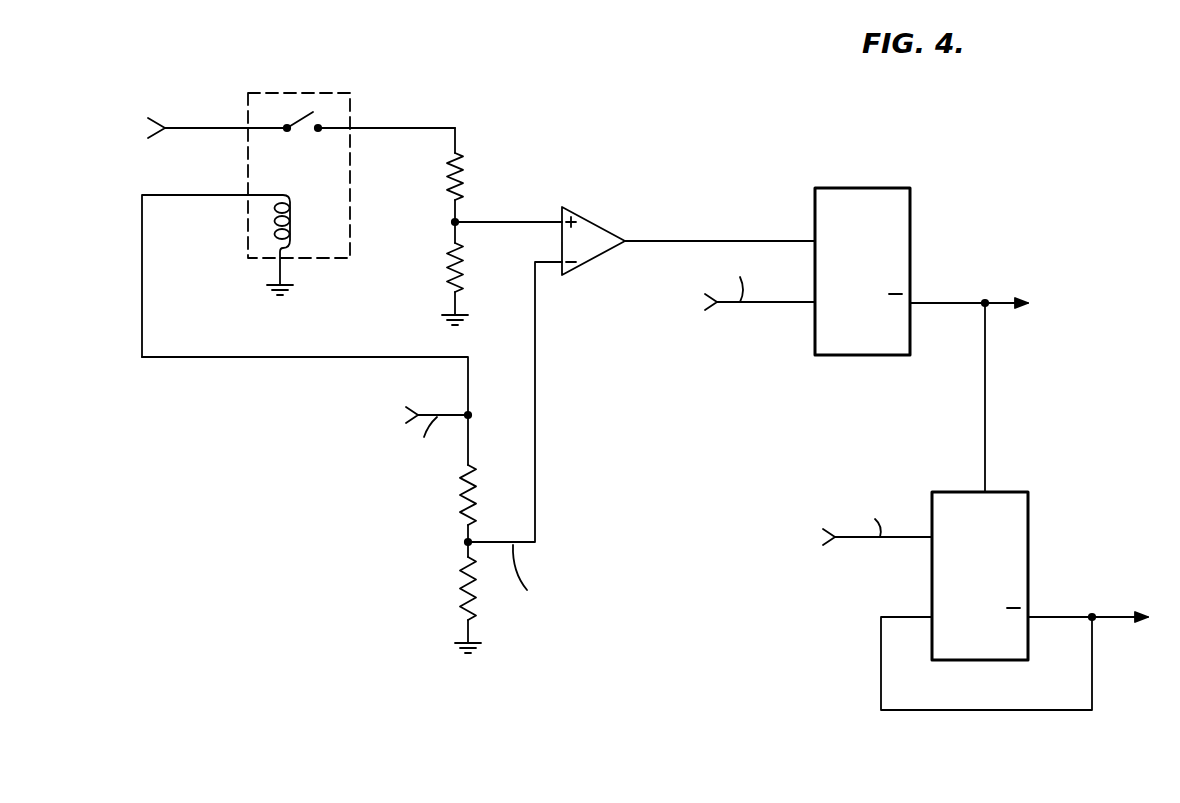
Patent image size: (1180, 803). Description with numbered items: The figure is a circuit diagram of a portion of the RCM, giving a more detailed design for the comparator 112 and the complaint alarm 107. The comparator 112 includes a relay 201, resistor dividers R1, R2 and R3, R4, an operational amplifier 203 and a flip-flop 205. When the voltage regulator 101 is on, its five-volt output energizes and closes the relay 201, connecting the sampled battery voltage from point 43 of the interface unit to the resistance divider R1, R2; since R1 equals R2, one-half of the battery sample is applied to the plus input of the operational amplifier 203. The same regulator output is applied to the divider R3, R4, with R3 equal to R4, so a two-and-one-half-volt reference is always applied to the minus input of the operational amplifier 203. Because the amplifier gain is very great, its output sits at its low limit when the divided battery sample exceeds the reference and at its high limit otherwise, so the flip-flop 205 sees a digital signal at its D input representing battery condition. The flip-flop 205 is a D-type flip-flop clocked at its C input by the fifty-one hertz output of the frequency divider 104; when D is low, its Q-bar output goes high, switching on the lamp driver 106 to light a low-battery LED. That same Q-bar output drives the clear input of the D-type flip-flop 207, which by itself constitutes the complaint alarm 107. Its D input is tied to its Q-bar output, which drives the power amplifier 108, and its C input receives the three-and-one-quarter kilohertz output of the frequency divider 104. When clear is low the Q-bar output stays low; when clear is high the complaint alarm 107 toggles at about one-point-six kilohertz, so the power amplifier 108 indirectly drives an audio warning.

The comparator 112 is at (638, 91).
The point of the interface unit 43 is at (191, 127).
The relay 201 is at (312, 93).
The resistor R1 is at (462, 193).
The resistor R2 is at (462, 264).
The resistor R3 is at (460, 497).
The resistor R4 is at (460, 579).
The operational amplifier 203 is at (590, 219).
The frequency divider 104 is at (750, 403).
The flip-flop 205 is at (816, 190).
The lamp driver 106 is at (1096, 311).
The flip-flop 207 is at (1013, 492).
The power amplifier 108 is at (1155, 612).
The complaint alarm 107 is at (907, 578).
The voltage regulator 101 is at (302, 434).